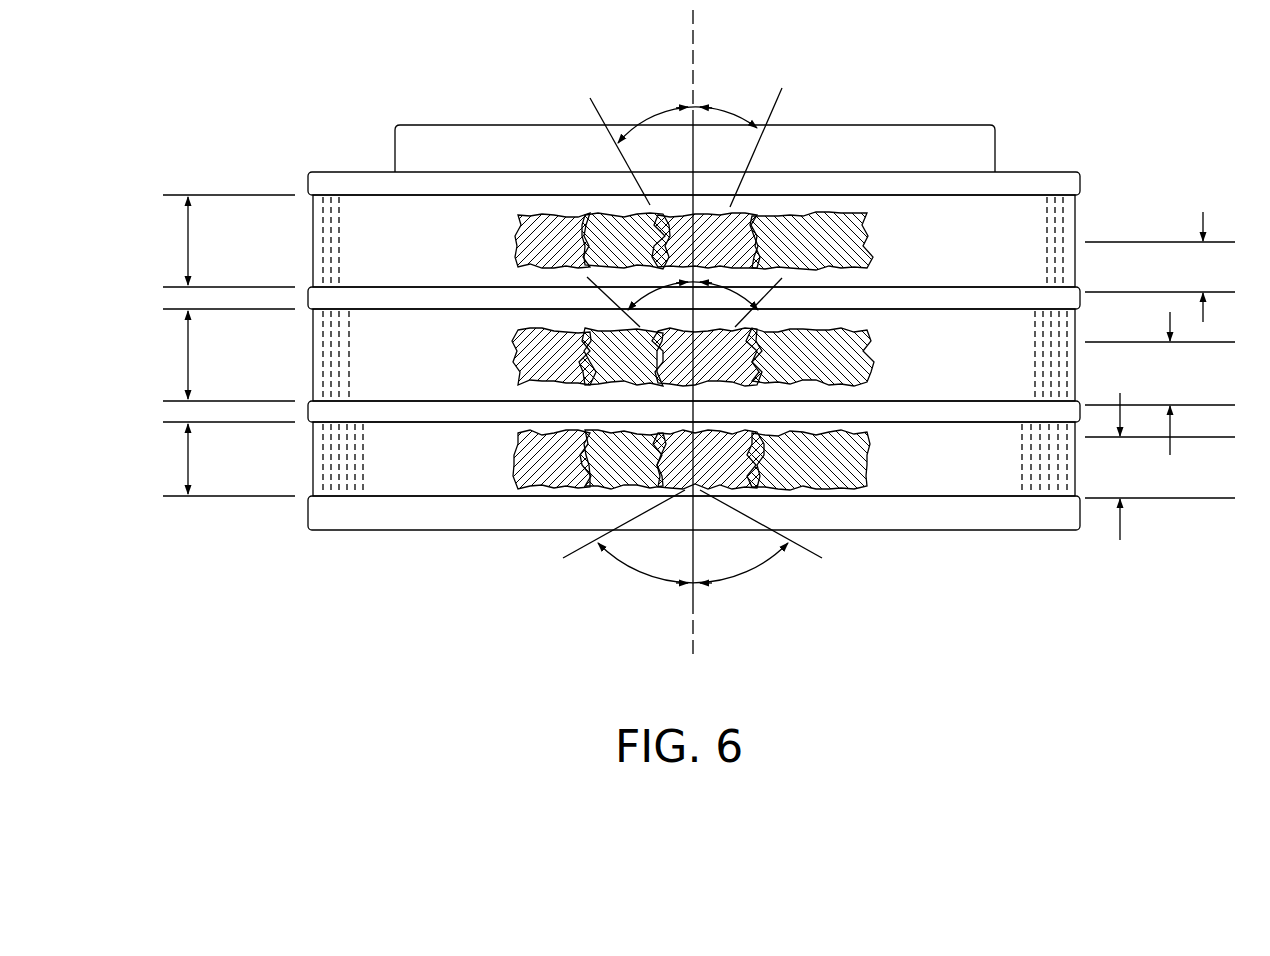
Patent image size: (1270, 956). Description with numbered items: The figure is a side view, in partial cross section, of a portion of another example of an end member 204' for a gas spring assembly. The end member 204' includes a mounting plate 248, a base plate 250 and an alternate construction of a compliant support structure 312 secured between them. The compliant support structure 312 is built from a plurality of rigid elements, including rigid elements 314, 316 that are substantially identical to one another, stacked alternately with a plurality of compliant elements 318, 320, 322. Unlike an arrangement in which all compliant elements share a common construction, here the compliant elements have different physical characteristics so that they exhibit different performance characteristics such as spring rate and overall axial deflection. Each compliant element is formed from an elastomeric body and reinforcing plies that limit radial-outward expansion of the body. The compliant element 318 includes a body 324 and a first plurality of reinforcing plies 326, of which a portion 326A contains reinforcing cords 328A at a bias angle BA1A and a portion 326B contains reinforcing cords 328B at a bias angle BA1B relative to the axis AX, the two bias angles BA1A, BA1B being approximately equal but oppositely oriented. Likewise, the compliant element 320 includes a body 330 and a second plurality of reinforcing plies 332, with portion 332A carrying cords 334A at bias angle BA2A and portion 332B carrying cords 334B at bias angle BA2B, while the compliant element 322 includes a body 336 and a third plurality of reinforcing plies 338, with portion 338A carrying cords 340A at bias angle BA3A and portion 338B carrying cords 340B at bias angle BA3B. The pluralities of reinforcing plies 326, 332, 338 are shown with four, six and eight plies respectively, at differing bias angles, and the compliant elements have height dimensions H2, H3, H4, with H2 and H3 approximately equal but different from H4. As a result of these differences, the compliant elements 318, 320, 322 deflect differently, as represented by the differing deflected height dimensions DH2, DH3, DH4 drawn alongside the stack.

The end member 204' is at (681, 337).
The axis AX is at (700, 33).
The mounting plate 248 is at (397, 146).
The base plate 250 is at (335, 522).
The compliant support structure 312 is at (1092, 208).
The rigid element 314 is at (372, 302).
The rigid element 316 is at (416, 424).
The compliant element 318 is at (883, 232).
The compliant element 320 is at (940, 326).
The compliant element 322 is at (945, 440).
The body 324 is at (1000, 215).
The first plurality of reinforcing plies 326 is at (318, 232).
The portion of the reinforcing plies 326A is at (538, 222).
The portion of the reinforcing plies 326B is at (606, 220).
The reinforcing cords 328A is at (762, 226).
The reinforcing cords 328B is at (815, 228).
The body 330 is at (985, 478).
The second plurality of reinforcing plies 332 is at (318, 345).
The portion of the reinforcing plies 332A is at (548, 348).
The portion of the reinforcing plies 332B is at (605, 378).
The reinforcing cords 334A is at (732, 360).
The reinforcing cords 334B is at (835, 343).
The body 336 is at (1007, 378).
The third plurality of reinforcing plies 338 is at (318, 462).
The portion of the reinforcing plies 338A is at (530, 470).
The portion of the reinforcing plies 338B is at (600, 476).
The reinforcing cords 340A is at (745, 486).
The reinforcing cords 340B is at (852, 458).
The bias angle BA1A is at (660, 112).
The bias angle BA1B is at (722, 108).
The bias angle BA2A is at (650, 284).
The bias angle BA2B is at (740, 284).
The bias angle BA3A is at (645, 578).
The bias angle BA3B is at (745, 575).
The height dimension H2 is at (186, 232).
The height dimension H3 is at (186, 345).
The height dimension H4 is at (186, 462).
The deflected height dimension DH2 is at (1203, 218).
The deflected height dimension DH3 is at (1170, 314).
The deflected height dimension DH4 is at (1122, 540).